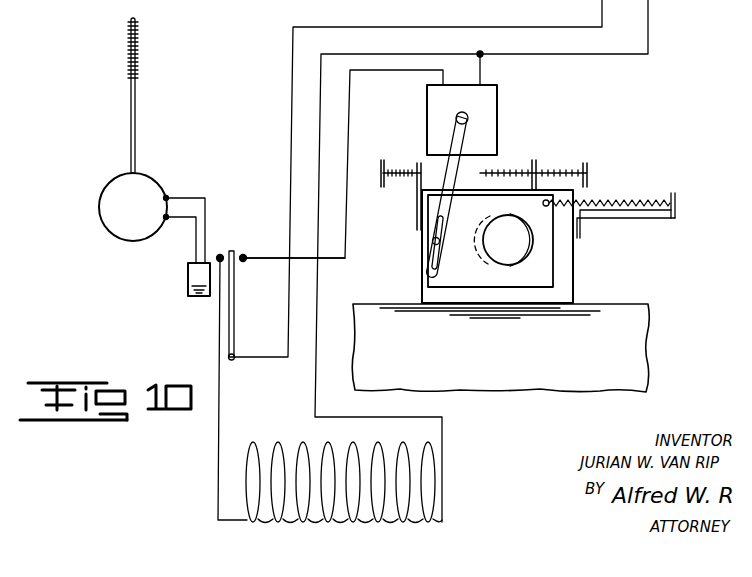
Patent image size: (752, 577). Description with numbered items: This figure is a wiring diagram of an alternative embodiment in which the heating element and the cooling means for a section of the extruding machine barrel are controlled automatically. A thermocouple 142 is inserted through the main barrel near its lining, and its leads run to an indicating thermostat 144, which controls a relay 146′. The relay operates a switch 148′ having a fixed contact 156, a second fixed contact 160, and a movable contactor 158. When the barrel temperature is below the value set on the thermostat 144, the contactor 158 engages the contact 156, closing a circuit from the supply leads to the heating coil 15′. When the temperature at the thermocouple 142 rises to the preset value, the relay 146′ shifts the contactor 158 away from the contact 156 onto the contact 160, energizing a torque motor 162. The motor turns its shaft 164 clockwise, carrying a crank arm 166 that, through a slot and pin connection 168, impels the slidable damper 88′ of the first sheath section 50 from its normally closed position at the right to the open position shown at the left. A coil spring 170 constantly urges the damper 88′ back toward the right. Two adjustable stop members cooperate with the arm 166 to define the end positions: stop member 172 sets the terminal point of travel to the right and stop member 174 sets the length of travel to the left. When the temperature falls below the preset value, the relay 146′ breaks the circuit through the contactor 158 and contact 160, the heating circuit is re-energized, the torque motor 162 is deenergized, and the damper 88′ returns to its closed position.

The thermocouple 142 is at (137, 57).
The indicating thermostat 144 is at (128, 232).
The relay 146′ is at (198, 296).
The fixed contact 156 is at (220, 255).
The fixed contact 160 is at (246, 258).
The movable contactor 158 is at (234, 332).
The switch 148′ is at (242, 274).
The coil 15′ is at (258, 442).
The torque motor 162 is at (497, 103).
The shaft 164 is at (470, 120).
The crank arm 166 is at (455, 130).
The slot and pin connection 168 is at (432, 243).
The adjustable stop member 172 is at (508, 171).
The adjustable stop member 174 is at (400, 180).
The coil spring 170 is at (622, 201).
The slidable damper 88′ is at (540, 277).
The first section 50 is at (645, 304).